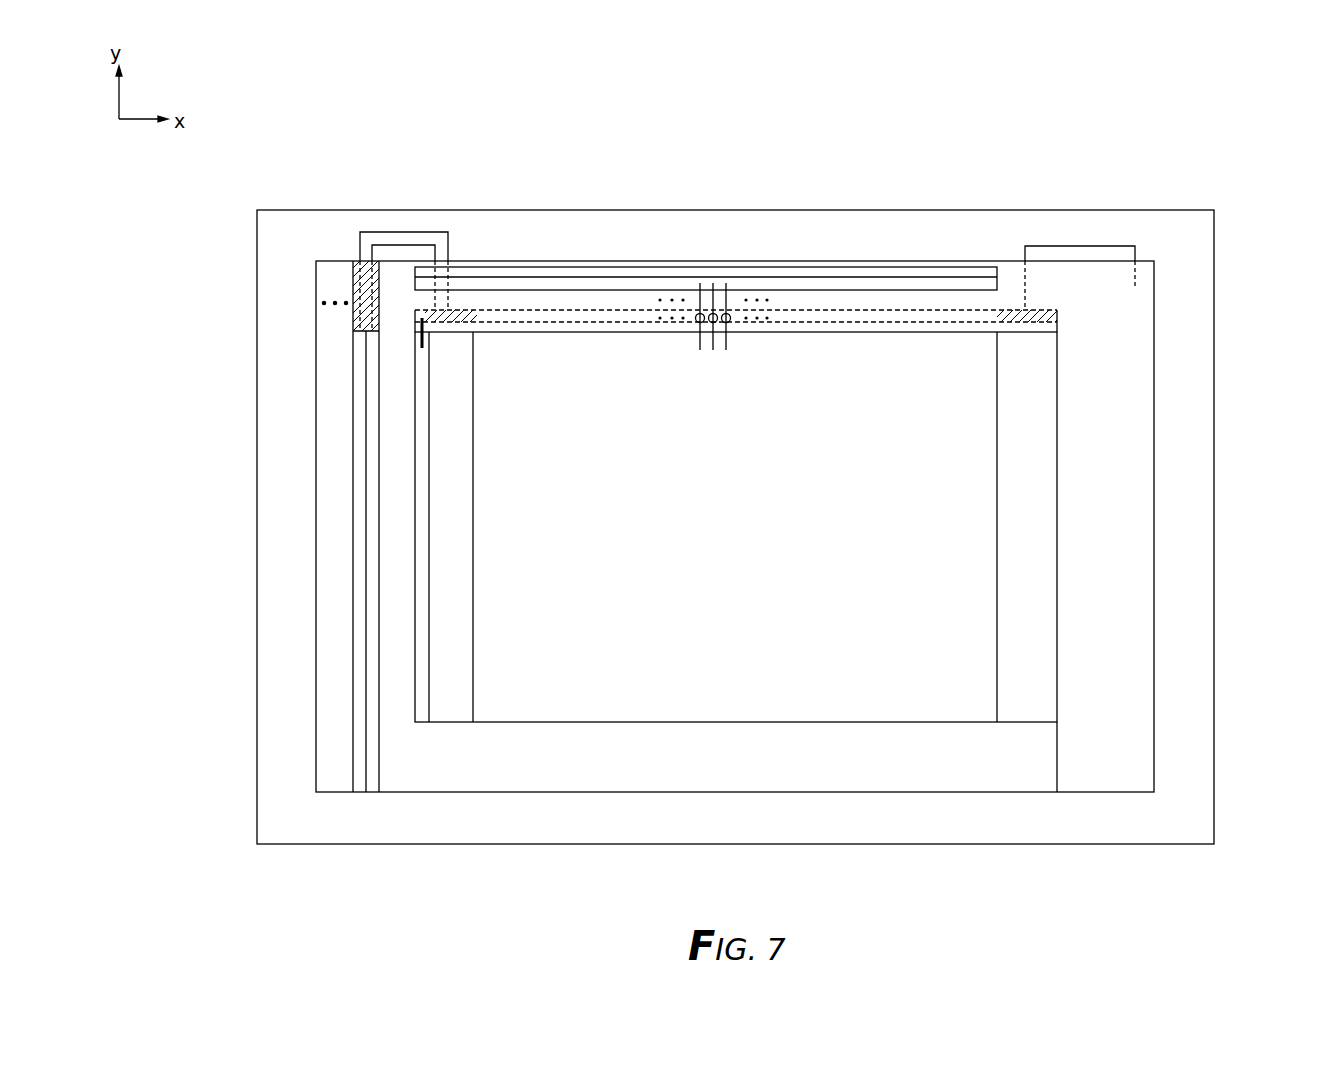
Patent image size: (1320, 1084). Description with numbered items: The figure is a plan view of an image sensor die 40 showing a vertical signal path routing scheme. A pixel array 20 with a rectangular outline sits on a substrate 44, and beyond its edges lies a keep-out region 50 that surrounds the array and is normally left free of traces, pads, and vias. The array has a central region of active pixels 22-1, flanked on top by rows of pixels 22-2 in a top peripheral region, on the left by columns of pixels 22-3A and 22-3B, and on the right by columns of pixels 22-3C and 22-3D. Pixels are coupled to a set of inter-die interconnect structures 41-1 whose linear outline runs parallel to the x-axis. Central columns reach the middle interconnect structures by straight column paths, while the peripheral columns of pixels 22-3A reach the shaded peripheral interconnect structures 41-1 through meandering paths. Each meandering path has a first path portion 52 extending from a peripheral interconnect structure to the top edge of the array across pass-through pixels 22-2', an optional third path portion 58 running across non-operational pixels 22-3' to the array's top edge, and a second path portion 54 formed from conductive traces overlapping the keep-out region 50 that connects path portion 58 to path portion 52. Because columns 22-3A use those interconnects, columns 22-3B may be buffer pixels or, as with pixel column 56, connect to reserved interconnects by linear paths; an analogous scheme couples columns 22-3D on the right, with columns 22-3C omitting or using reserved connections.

The image sensor die 40 is at (1138, 130).
The substrate 44 is at (1215, 232).
The pixel array 20 is at (1155, 470).
The keep-out region 50 is at (698, 250).
The first path portion 52 is at (447, 294).
The second path portion 54 is at (428, 246).
The pixel column 56 is at (430, 478).
The third path portion 58 is at (355, 296).
The central region of active pixels 22-1 is at (740, 528).
The rows of pixels in top peripheral region 22-2 is at (773, 297).
The non-operational or pass-through pixels 22-2' is at (512, 214).
The non-operational or pass-through pixels 22-3' is at (282, 313).
The peripheral columns of pixels 22-3A is at (414, 800).
The columns of pixels 22-3B is at (473, 730).
The columns of pixels 22-3C is at (1056, 730).
The peripheral columns of pixels 22-3D is at (1154, 800).
The interconnect structures 41-1 is at (423, 322).